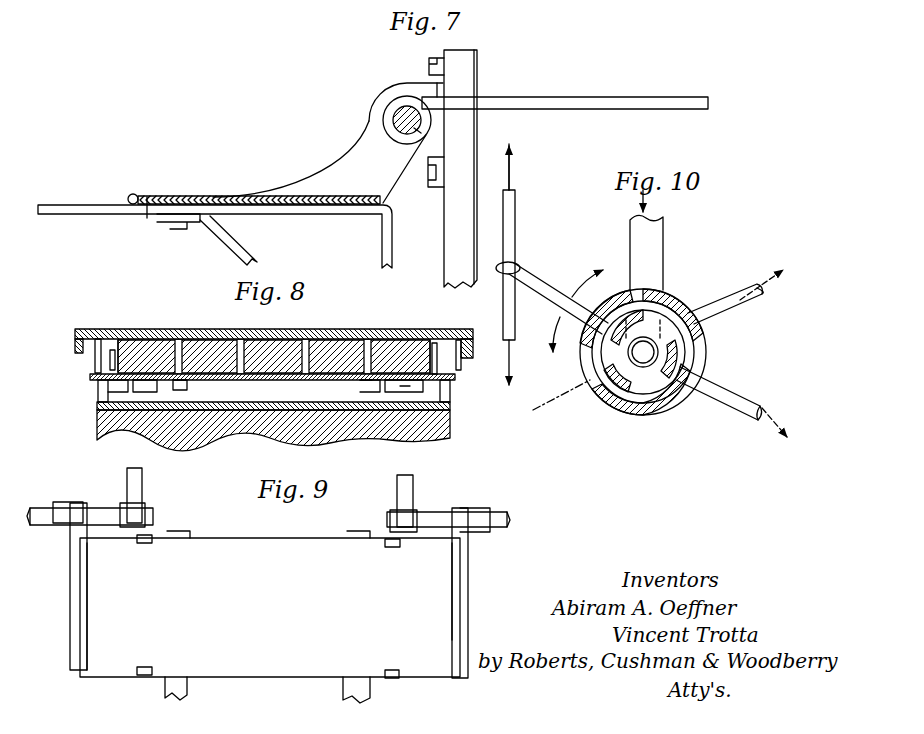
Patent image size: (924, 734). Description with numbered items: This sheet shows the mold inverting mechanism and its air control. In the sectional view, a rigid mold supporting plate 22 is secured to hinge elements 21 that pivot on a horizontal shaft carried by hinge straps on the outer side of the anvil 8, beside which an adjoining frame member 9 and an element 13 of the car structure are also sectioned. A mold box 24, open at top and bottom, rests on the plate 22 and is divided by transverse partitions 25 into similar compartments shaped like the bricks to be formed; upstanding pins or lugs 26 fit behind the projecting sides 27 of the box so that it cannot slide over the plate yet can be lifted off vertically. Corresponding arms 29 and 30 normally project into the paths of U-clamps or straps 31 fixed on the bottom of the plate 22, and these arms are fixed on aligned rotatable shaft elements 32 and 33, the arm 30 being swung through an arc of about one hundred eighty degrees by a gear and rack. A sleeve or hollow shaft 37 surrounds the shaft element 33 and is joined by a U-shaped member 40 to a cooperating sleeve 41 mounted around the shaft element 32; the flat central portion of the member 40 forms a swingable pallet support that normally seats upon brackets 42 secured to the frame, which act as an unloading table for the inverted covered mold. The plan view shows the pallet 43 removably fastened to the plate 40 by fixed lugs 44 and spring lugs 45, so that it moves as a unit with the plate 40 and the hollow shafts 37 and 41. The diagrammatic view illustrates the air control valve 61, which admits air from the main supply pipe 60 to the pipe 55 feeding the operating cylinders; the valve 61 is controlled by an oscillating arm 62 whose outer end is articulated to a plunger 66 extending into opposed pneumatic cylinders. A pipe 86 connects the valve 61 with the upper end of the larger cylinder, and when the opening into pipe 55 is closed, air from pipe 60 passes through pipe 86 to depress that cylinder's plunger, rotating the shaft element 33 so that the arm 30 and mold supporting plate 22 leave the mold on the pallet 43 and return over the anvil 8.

In FIG. 8, the anvil 8 is at (438, 430).
In FIG. 8, the frame 9 is at (475, 420).
In FIG. 8, the ceramic blocks 13 is at (197, 338).
In FIG. 8, the hinge elements 21 is at (332, 387).
In FIG. 8, the mold supporting plate 22 is at (92, 375).
In FIG. 8, the mold box 24 is at (95, 347).
In FIG. 8, the transverse partitions 25 is at (333, 340).
In FIG. 8, the upstanding pins or lugs 26 is at (116, 359).
In FIG. 8, the projecting sides 27 is at (107, 353).
In FIG. 7, the arm 29 is at (603, 102).
In FIG. 9, the arm 29 is at (135, 485).
In FIG. 8, the arm 30 is at (440, 385).
In FIG. 9, the arm 30 is at (405, 487).
In FIG. 8, the U-clamps or straps 31 is at (248, 389).
In FIG. 9, the shaft element 32 is at (103, 512).
In FIG. 9, the shaft element 33 is at (435, 520).
In FIG. 9, the sleeve or hollow shaft 37 is at (467, 510).
In FIG. 7, the U-shaped member 40 is at (147, 217).
In FIG. 8, the U-shaped member 40 is at (400, 333).
In FIG. 9, the U-shaped member 40 is at (80, 665).
In FIG. 9, the sleeve 41 is at (78, 503).
In FIG. 7, the brackets 42 is at (62, 207).
In FIG. 9, the brackets 42 is at (353, 688).
In FIG. 7, the pallet 43 is at (187, 195).
In FIG. 9, the pallet 43 is at (247, 570).
In FIG. 7, the fixed lugs 44 is at (134, 194).
In FIG. 9, the fixed lugs 44 is at (390, 615).
In FIG. 7, the spring lugs 45 is at (378, 195).
In FIG. 9, the spring lugs 45 is at (385, 567).
In FIG. 10, the pipe 55 is at (747, 407).
In FIG. 10, the main supply pipe 60 is at (653, 235).
In FIG. 10, the valve 61 is at (637, 407).
In FIG. 10, the oscillating arm 62 is at (550, 297).
In FIG. 10, the plunger 66 is at (510, 225).
In FIG. 10, the pipe 86 is at (737, 293).